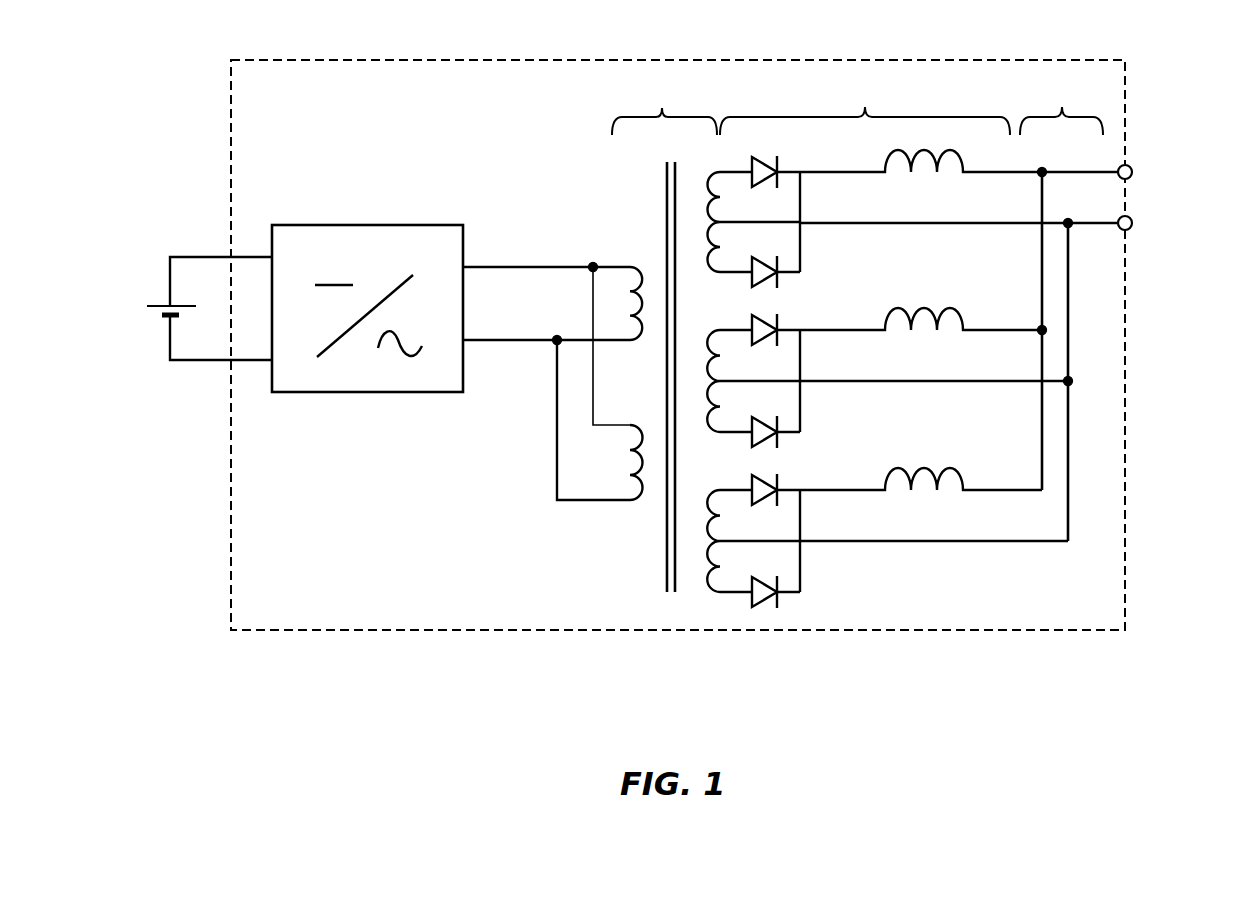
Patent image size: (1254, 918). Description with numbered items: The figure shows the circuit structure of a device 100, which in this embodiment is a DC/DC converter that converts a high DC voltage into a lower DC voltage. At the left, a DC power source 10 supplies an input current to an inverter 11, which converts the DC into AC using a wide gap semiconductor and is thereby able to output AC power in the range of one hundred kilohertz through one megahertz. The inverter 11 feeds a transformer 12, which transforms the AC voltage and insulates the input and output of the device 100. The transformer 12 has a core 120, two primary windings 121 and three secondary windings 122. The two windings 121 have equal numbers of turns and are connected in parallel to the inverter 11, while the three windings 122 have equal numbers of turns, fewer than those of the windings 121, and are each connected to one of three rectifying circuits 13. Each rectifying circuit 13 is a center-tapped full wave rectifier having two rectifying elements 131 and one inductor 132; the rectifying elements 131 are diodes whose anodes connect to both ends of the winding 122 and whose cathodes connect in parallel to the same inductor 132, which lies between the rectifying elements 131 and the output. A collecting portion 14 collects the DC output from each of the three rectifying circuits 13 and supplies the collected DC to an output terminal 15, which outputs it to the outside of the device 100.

The device 100 is at (298, 59).
The DC power source 10 is at (145, 305).
The inverter 11 is at (384, 226).
The transformer 12 is at (664, 105).
The core 120 is at (658, 591).
The winding 121 is at (638, 265).
The winding 122 is at (712, 274).
The rectifying circuit 13 is at (865, 105).
The rectifying element 131 is at (782, 160).
The inductor 132 is at (958, 178).
The collecting portion 14 is at (962, 308).
The output terminal 15 is at (1133, 168).